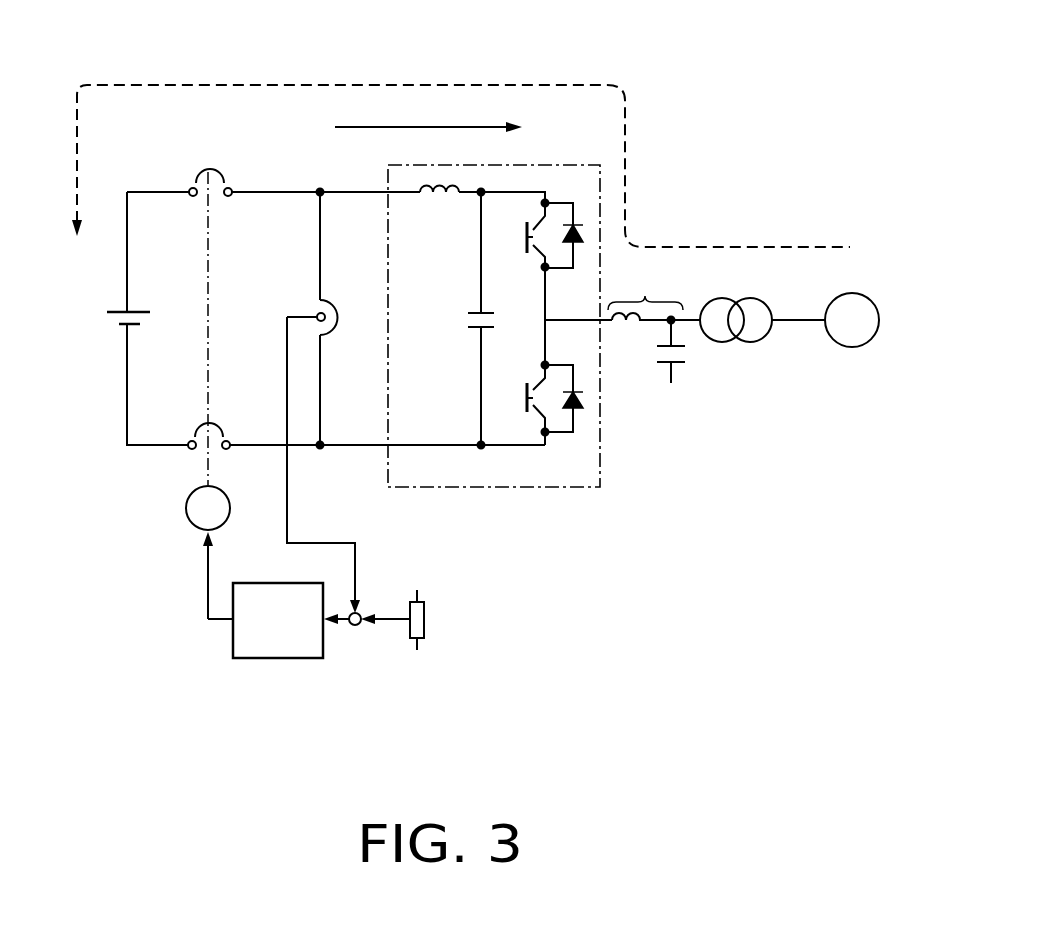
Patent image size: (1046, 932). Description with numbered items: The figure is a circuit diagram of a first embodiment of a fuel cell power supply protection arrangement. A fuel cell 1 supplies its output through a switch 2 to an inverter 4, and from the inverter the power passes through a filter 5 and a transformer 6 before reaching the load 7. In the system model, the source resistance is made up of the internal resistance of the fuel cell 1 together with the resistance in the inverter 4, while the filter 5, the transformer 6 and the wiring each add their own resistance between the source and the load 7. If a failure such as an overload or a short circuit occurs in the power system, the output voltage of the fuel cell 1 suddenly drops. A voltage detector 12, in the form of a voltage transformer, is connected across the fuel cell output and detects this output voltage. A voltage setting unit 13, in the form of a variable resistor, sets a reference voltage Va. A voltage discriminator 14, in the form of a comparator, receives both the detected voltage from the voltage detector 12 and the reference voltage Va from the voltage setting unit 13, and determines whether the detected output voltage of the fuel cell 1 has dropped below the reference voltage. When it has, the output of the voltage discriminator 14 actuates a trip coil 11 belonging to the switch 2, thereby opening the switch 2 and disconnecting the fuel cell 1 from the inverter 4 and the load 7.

The fuel cell 1 is at (107, 318).
The switch 2 is at (212, 170).
The inverter 4 is at (567, 163).
The filter 5 is at (645, 296).
The transformer 6 is at (735, 343).
The load 7 is at (855, 348).
The trip coil 11 is at (187, 515).
The voltage detector 12 is at (322, 303).
The voltage setting unit 13 is at (425, 612).
The voltage discriminator 14 is at (270, 658).